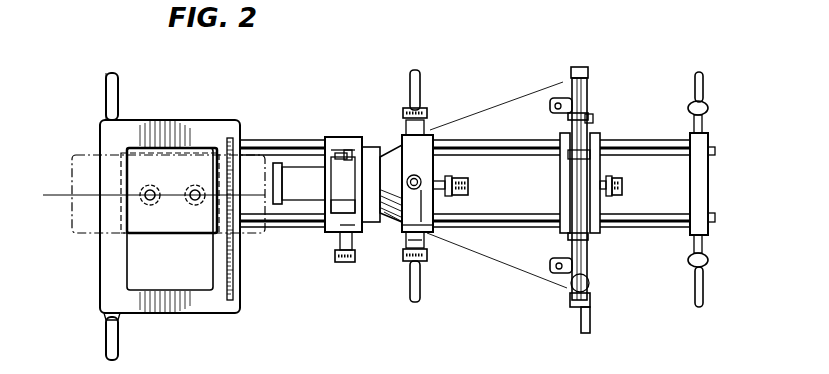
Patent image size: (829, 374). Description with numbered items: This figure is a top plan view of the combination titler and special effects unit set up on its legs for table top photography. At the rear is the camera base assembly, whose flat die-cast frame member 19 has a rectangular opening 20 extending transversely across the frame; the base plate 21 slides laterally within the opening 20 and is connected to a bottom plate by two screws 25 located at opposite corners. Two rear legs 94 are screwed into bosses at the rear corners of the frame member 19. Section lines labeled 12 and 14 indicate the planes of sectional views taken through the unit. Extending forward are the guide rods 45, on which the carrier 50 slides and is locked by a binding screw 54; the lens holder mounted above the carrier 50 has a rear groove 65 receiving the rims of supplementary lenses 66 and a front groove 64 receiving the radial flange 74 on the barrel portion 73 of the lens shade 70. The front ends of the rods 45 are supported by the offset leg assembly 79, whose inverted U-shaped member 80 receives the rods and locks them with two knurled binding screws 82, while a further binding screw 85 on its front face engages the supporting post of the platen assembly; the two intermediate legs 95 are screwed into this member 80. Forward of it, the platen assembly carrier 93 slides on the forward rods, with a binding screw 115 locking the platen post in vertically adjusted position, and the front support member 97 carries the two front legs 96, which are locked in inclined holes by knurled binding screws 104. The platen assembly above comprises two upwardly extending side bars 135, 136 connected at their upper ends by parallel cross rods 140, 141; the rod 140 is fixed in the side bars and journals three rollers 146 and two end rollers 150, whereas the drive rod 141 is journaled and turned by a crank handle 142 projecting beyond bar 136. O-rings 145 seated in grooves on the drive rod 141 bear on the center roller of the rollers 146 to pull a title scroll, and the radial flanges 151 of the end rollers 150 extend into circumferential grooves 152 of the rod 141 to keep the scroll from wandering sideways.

The section line 12- 12 is at (100, 193).
The section line 14- 14 is at (640, 267).
The frame member 19 is at (105, 260).
The rectangular opening 20 is at (199, 290).
The base plate 21 is at (172, 160).
The screws 25 is at (203, 160).
The guide rods 45 is at (486, 150).
The carrier 50 is at (343, 228).
The binding screw 54 is at (340, 262).
The front groove 64 is at (348, 212).
The rear groove 65 is at (338, 192).
The supplementary lenses 66 is at (330, 142).
The lens shade 70 is at (403, 150).
The barrel portion 73 is at (372, 165).
The radial flange 74 is at (348, 157).
The offset leg assembly 79 is at (398, 228).
The inverted U-shaped member 80 is at (421, 224).
The binding screws 82 is at (410, 262).
The binding screw 85 is at (469, 184).
The platen assembly carrier 93 is at (562, 208).
The rear legs 94 is at (106, 97).
The intermediate legs 95 is at (418, 84).
The front legs 96 is at (703, 84).
The front support member 97 is at (701, 188).
The binding screws 104 is at (708, 109).
The binding screw 115 is at (620, 188).
The side bar 135 is at (583, 67).
The side bar 136 is at (570, 300).
The cross rod 140 is at (565, 83).
The cross rod 141 is at (588, 88).
The crank handle 142 is at (583, 323).
The O-rings 145 is at (612, 183).
The rollers 146 is at (574, 157).
The end rollers 150 is at (569, 118).
The radial flanges 151 is at (552, 103).
The circumferential grooves 152 is at (589, 119).